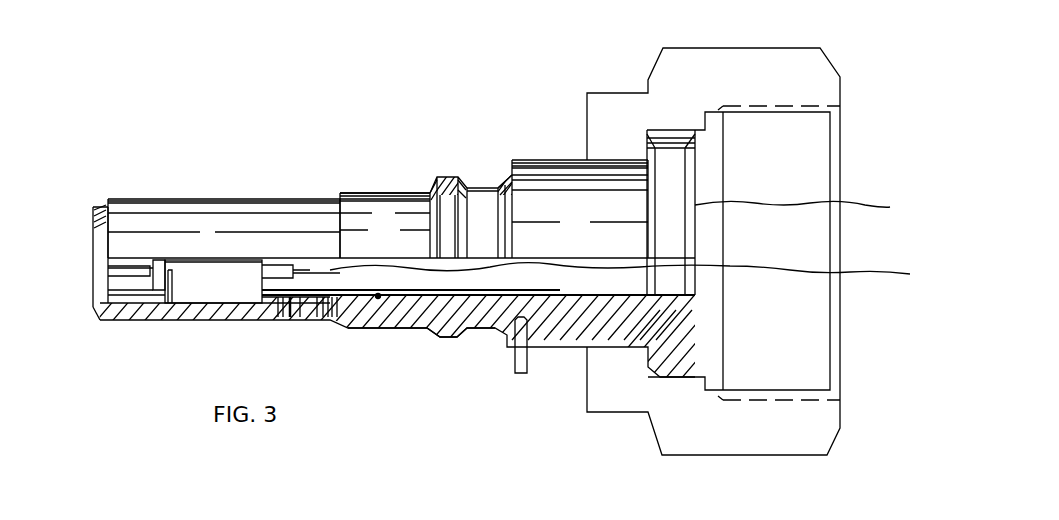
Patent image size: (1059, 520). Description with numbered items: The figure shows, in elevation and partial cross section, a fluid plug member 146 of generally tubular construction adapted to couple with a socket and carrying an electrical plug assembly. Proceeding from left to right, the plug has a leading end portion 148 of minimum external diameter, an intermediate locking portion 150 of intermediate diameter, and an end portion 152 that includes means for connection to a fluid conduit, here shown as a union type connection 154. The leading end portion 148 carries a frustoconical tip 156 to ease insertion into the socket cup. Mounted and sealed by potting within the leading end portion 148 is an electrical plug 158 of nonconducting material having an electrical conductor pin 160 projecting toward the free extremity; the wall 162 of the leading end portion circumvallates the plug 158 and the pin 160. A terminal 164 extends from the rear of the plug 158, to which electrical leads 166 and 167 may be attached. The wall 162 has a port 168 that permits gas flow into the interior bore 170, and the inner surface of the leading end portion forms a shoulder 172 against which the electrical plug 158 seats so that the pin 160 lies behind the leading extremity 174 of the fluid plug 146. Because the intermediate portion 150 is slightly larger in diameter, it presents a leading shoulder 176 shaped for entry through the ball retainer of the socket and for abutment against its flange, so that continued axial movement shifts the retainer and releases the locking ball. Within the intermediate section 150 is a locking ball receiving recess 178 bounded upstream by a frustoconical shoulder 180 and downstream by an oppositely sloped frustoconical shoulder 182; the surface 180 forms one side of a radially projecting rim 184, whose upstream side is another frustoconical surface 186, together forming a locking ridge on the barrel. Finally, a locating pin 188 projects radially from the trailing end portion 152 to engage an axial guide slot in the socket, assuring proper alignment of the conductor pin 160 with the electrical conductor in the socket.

The fluid plug member 146 is at (365, 187).
The leading end portion 148 is at (244, 212).
The intermediate locking portion 150 is at (395, 194).
The end portion 152 is at (552, 189).
The union type connection 154 is at (693, 73).
The frustoconical tip 156 is at (107, 205).
The electrical plug 158 is at (182, 288).
The electrical conductor pin 160 is at (108, 282).
The wall 162 is at (280, 298).
The terminal 164 is at (272, 274).
The electrical lead 166 is at (540, 262).
The electrical lead 167 is at (813, 222).
The port 168 is at (290, 306).
The interior bore 170 is at (378, 297).
The shoulder 172 is at (238, 296).
The leading extremity 174 is at (96, 255).
The leading shoulder 176 is at (342, 192).
The locking ball receiving recess 178 is at (480, 187).
The frustoconical shoulder 180 is at (462, 187).
The frustoconical shoulder 182 is at (505, 194).
The radially projecting rim 184 is at (446, 176).
The frustoconical surface 186 is at (433, 182).
The locating pin 188 is at (528, 351).